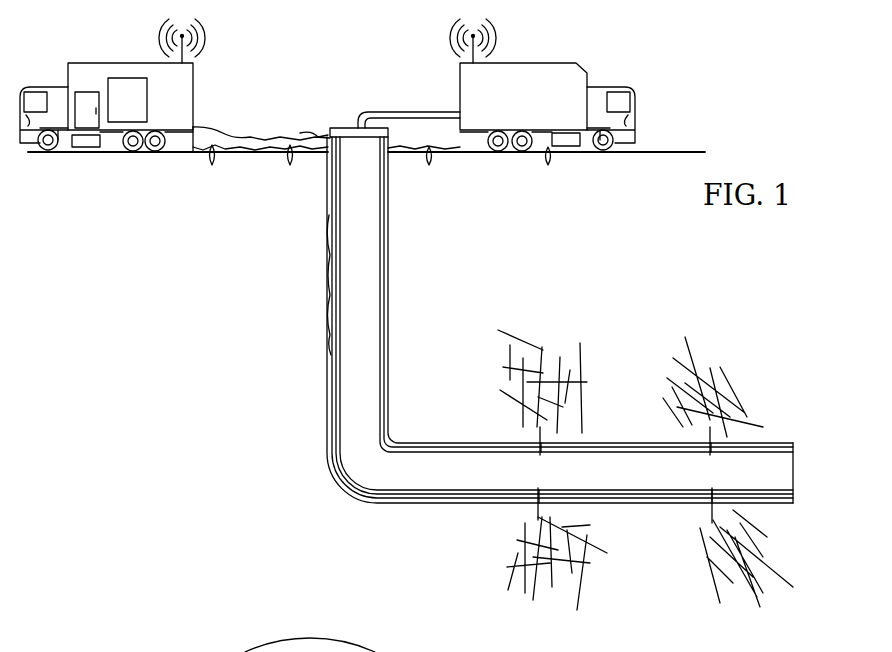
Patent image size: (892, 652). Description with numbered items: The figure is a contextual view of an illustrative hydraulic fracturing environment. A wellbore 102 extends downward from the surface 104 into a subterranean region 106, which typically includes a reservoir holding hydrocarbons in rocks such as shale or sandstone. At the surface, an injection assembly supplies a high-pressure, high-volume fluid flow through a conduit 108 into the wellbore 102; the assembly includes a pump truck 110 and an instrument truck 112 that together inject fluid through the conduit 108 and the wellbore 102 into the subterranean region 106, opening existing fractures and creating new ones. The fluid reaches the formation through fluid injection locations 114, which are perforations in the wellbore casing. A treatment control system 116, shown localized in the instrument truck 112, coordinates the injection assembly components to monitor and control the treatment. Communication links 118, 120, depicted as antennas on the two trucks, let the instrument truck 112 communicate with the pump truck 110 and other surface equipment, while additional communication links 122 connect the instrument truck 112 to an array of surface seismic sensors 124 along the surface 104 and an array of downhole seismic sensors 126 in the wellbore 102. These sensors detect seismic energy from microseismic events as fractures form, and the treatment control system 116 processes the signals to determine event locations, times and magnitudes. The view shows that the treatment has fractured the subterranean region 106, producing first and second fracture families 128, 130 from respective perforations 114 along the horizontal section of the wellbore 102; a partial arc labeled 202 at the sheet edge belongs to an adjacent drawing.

In FIG. 1, the wellbore 102 is at (389, 213).
In FIG. 1, the surface 104 is at (638, 154).
In FIG. 1, the subterranean region 106 is at (666, 578).
In FIG. 1, the conduit 108 is at (385, 112).
In FIG. 1, the pump truck 110 is at (589, 66).
In FIG. 1, the instrument truck 112 is at (69, 67).
In FIG. 1, the fluid injection location 114 is at (710, 447).
In FIG. 1, the treatment control system 116 is at (123, 77).
In FIG. 1, the communication link 118 is at (201, 23).
In FIG. 1, the communication link 120 is at (492, 22).
In FIG. 1, the communication link 122 is at (203, 134).
In FIG. 1, the surface seismic sensor 124 is at (285, 158).
In FIG. 1, the downhole seismic sensor 126 is at (330, 340).
In FIG. 1, the first fracture family 128 is at (583, 322).
In FIG. 1, the second fracture family 130 is at (750, 322).
In FIG. 2, the wellbore system 202 is at (396, 651).